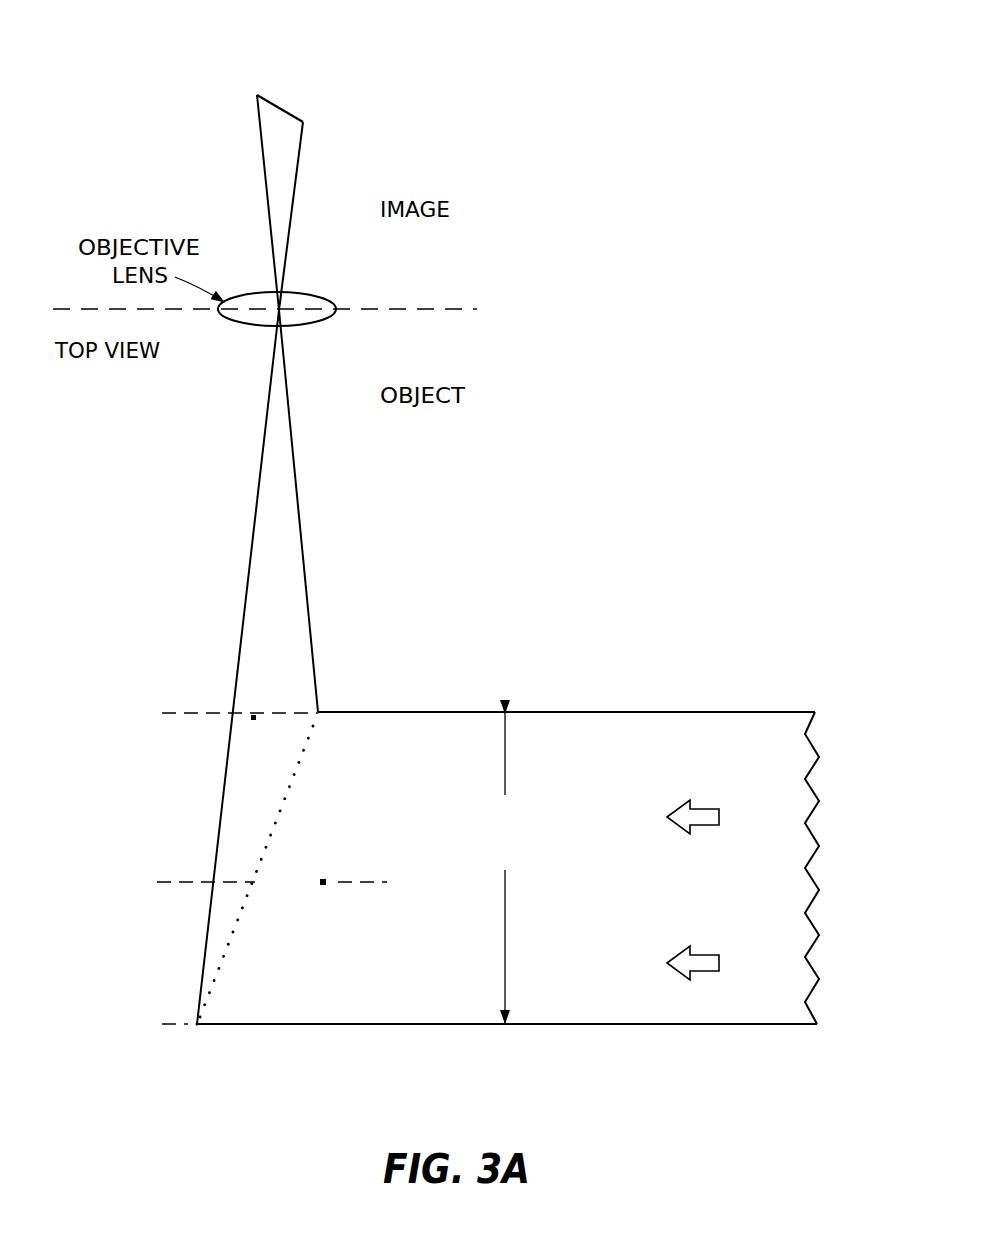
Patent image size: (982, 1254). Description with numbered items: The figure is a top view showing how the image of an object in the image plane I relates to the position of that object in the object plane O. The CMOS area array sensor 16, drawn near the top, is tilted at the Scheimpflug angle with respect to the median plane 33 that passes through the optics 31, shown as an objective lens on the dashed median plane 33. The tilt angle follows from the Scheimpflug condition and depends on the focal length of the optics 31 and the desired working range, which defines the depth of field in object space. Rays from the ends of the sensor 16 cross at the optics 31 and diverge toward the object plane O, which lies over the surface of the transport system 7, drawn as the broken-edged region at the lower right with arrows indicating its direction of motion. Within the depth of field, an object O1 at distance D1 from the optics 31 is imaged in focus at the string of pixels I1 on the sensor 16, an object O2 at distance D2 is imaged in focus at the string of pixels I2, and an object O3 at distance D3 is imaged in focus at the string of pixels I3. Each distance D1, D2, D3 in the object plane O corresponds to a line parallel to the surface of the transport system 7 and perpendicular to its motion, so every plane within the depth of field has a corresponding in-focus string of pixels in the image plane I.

The CMOS area array sensor 16 is at (273, 103).
The optics 31 is at (318, 297).
The median plane 33 is at (468, 309).
The transport system 7 is at (753, 728).
The image plane I is at (466, 128).
The string of pixels I1 is at (303, 122).
The string of pixels I2 is at (281, 110).
The string of pixels I3 is at (257, 99).
The object plane O is at (483, 520).
The object O1 is at (203, 1022).
The object O2 is at (327, 880).
The object O3 is at (253, 720).
The distance D1 is at (154, 1027).
The distance D2 is at (253, 886).
The distance D3 is at (219, 717).